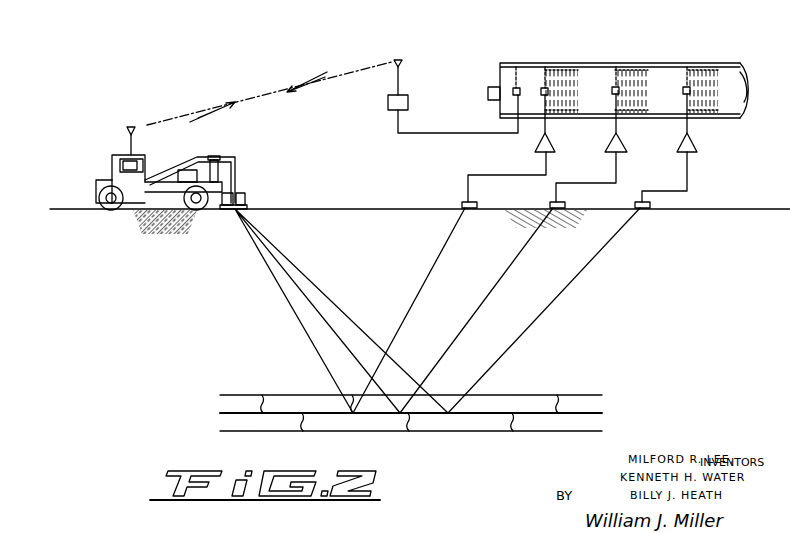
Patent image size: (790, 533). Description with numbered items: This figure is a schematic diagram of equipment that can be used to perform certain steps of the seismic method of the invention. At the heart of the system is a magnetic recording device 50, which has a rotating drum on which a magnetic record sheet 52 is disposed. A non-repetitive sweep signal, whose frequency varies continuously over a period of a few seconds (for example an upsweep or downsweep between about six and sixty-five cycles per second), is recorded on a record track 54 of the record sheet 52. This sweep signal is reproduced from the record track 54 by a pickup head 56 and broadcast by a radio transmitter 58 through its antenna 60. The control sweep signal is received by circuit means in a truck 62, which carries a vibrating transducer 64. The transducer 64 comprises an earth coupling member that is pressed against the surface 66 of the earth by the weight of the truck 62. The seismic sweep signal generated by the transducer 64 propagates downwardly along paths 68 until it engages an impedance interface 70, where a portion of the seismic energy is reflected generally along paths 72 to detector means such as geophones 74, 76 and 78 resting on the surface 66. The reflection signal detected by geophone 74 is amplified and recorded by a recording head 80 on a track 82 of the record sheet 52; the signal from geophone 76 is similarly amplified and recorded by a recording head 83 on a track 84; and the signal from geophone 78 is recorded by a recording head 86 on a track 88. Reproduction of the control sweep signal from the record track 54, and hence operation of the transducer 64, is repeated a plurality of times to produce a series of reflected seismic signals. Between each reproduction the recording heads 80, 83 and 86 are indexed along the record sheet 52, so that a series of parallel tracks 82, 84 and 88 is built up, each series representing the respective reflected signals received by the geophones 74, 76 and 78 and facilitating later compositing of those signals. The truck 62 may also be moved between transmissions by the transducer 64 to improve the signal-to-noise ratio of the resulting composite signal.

The magnetic recording device 50 is at (494, 60).
The magnetic record sheet 52 is at (665, 70).
The record track 54 is at (517, 63).
The pickup head 56 is at (512, 94).
The radio transmitter 58 is at (408, 98).
The antenna 60 is at (402, 62).
The truck 62 is at (105, 178).
The vibrating transducer 64 is at (248, 201).
The surface of the earth 66 is at (340, 209).
The paths 68 is at (332, 304).
The impedance interface 70 is at (540, 412).
The paths 72 is at (487, 297).
The geophone 74 is at (463, 201).
The geophone 76 is at (550, 203).
The geophone 78 is at (635, 204).
The recording head 80 is at (540, 97).
The track 82 is at (578, 57).
The recording head 83 is at (611, 96).
The track 84 is at (648, 57).
The recording head 86 is at (682, 96).
The track 88 is at (718, 57).